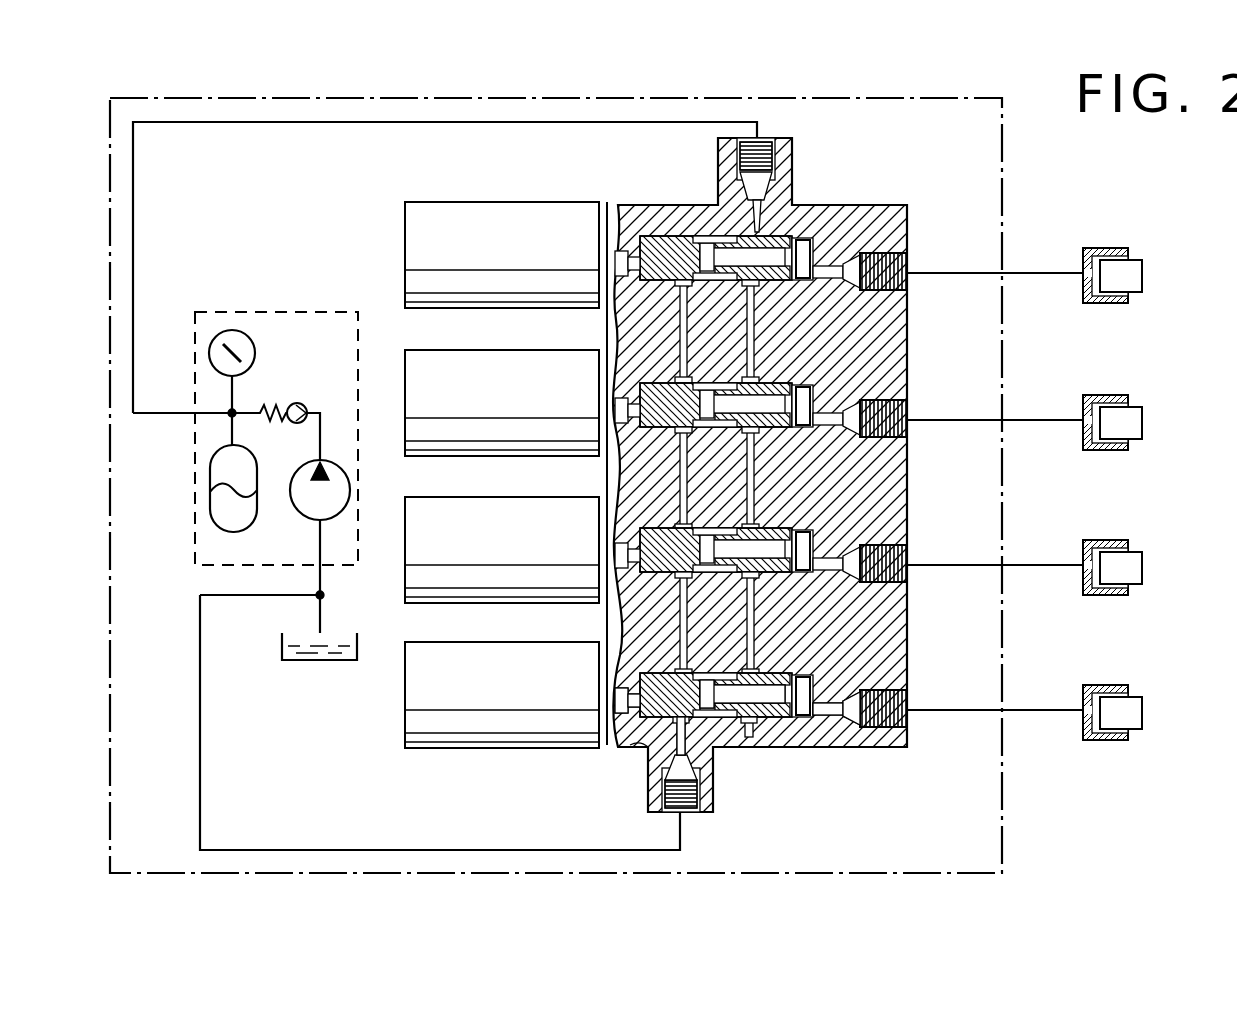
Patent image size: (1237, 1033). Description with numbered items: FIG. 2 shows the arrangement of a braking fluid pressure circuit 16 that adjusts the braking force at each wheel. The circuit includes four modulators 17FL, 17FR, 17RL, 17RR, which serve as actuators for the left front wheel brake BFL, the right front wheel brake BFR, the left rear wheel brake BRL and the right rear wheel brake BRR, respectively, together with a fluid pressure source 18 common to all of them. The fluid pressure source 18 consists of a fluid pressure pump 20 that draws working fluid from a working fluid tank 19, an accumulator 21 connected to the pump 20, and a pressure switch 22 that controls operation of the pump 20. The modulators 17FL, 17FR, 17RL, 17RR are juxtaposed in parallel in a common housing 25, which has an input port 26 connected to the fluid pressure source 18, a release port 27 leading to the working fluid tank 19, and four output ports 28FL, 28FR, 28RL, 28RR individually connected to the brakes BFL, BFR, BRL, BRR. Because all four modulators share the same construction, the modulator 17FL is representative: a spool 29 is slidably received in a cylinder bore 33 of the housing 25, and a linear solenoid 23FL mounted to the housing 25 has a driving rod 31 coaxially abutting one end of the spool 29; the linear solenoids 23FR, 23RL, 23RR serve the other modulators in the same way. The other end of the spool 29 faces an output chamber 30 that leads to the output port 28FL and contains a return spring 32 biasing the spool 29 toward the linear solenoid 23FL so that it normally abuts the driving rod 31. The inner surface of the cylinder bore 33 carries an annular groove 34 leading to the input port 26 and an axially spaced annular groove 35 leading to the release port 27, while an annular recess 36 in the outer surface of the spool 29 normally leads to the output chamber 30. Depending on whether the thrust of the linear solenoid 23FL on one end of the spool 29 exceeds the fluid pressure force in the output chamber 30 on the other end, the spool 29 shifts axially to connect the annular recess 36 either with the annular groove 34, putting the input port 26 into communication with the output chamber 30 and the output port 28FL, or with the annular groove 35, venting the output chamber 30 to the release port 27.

The braking fluid pressure circuit 16 is at (1000, 833).
The modulator 17RR is at (910, 226).
The modulator 17RL is at (910, 398).
The modulator 17FR is at (910, 544).
The modulator 17FL is at (891, 756).
The fluid pressure source 18 is at (310, 314).
The working fluid tank 19 is at (284, 641).
The fluid pressure pump 20 is at (306, 510).
The accumulator 21 is at (212, 524).
The pressure switch 22 is at (256, 353).
The linear solenoid 23RR is at (516, 268).
The linear solenoid 23RL is at (516, 416).
The linear solenoid 23FR is at (516, 562).
The linear solenoid 23FL is at (516, 706).
The common housing 25 is at (898, 636).
The input port 26 is at (773, 145).
The release port 27 is at (690, 812).
The output port 28RR is at (907, 286).
The output port 28RL is at (907, 433).
The output port 28FR is at (907, 574).
The output port 28FL is at (907, 712).
The spool 29 is at (800, 666).
The output chamber 30 is at (822, 690).
The driving rod 31 is at (616, 690).
The return spring 32 is at (810, 718).
The cylinder bore 33 is at (648, 742).
The annular groove 34 is at (749, 725).
The annular groove 35 is at (672, 760).
The annular recess 36 is at (741, 665).
The right rear wheel brake BRR is at (1140, 271).
The left rear wheel brake BRL is at (1140, 418).
The right front wheel brake BFR is at (1142, 582).
The left front wheel brake BFL is at (1142, 682).